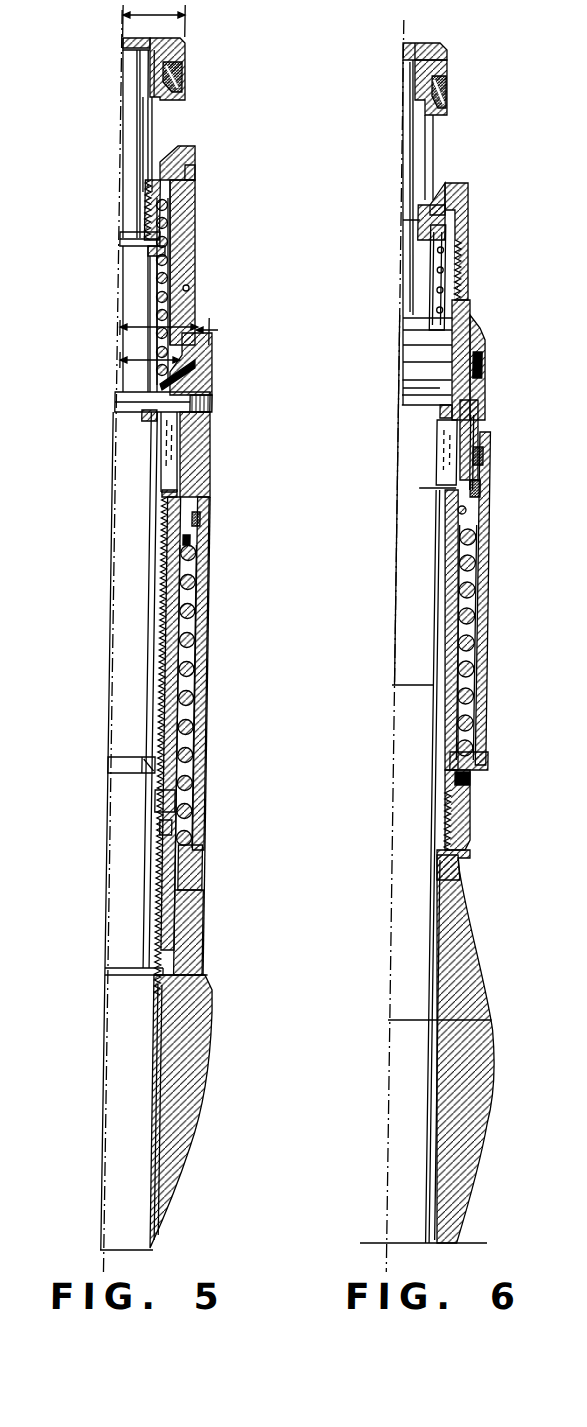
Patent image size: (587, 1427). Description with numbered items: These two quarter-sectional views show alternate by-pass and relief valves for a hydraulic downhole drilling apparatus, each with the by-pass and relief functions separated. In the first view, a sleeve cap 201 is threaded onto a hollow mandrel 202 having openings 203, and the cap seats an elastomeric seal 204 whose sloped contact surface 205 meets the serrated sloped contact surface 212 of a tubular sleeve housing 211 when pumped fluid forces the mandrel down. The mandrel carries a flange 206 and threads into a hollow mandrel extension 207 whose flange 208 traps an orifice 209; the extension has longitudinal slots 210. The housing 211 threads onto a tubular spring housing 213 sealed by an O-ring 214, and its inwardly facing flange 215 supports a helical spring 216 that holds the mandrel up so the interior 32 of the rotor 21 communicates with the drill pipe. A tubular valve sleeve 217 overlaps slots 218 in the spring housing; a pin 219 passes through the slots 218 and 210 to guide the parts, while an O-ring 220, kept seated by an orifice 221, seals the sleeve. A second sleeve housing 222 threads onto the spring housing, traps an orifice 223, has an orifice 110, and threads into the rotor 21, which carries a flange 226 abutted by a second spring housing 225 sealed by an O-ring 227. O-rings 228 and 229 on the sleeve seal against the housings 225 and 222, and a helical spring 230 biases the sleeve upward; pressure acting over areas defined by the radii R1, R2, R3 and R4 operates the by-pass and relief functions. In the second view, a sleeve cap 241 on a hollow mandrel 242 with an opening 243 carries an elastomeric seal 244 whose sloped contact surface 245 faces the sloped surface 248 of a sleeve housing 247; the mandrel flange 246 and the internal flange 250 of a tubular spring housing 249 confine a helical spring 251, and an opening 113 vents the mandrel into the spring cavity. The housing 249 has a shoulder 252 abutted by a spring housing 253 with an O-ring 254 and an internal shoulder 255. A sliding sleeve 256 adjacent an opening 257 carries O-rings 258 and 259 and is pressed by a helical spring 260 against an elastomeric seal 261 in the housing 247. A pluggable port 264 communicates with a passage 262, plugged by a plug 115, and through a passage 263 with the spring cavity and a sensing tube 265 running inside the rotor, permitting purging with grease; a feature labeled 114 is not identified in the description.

In FIG. 5, the rotor 21 is at (221, 1066).
In FIG. 6, the rotor 21 is at (497, 1129).
In FIG. 5, the interior of the rotor 32 is at (126, 1037).
In FIG. 5, the orifice 110 is at (188, 801).
In FIG. 6, the opening 113 is at (434, 271).
In FIG. 6, the shoulder 114 is at (505, 1021).
In FIG. 6, the plug 115 is at (488, 373).
In FIG. 5, the sleeve cap 201 is at (122, 44).
In FIG. 5, the hollow mandrel 202 is at (130, 81).
In FIG. 5, the openings 203 is at (152, 123).
In FIG. 5, the elastomeric seal 204 is at (186, 70).
In FIG. 5, the downwardly facing sloped contact surface 205 is at (182, 91).
In FIG. 5, the radially outwardly extending flange 206 is at (151, 184).
In FIG. 5, the hollow mandrel extension 207 is at (132, 299).
In FIG. 5, the flange 208 is at (154, 253).
In FIG. 5, the orifice 209 is at (125, 239).
In FIG. 5, the longitudinal slots 210 is at (155, 363).
In FIG. 5, the tubular sleeve housing 211 is at (198, 171).
In FIG. 5, the upwardly facing sloped contact surface 212 is at (184, 148).
In FIG. 5, the tubular spring housing 213 is at (200, 303).
In FIG. 5, the O-ring 214 is at (193, 286).
In FIG. 5, the inwardly facing flange 215 is at (155, 391).
In FIG. 5, the helical spring 216 is at (193, 223).
In FIG. 5, the tubular valve sleeve 217 is at (218, 456).
In FIG. 5, the longitudinal slots 218 is at (172, 453).
In FIG. 5, the pin 219 is at (218, 405).
In FIG. 5, the O-ring 220 is at (218, 359).
In FIG. 5, the orifice 221 is at (201, 379).
In FIG. 5, the second tubular sleeve housing 222 is at (131, 871).
In FIG. 5, the orifice 223 is at (162, 776).
In FIG. 5, the second tubular spring housing 225 is at (217, 901).
In FIG. 5, the radially extending flange 226 is at (219, 969).
In FIG. 5, the O-ring 227 is at (216, 861).
In FIG. 5, the O-ring 228 is at (208, 519).
In FIG. 5, the O-ring 229 is at (199, 541).
In FIG. 5, the helical spring 230 is at (205, 612).
In FIG. 6, the sleeve cap 241 is at (406, 49).
In FIG. 6, the hollow mandrel 242 is at (414, 136).
In FIG. 6, the opening 243 is at (438, 138).
In FIG. 6, the elastomeric seal 244 is at (449, 76).
In FIG. 6, the downwardly facing sloped contact surface 245 is at (448, 109).
In FIG. 6, the radially outwardly extending flange 246 is at (421, 221).
In FIG. 6, the tubular sleeve housing 247 is at (473, 193).
In FIG. 6, the upwardly facing sloped contact surface 248 is at (447, 186).
In FIG. 6, the tubular spring housing 249 is at (416, 394).
In FIG. 6, the radially extending internal flange 250 is at (451, 416).
In FIG. 6, the helical spring 251 is at (425, 358).
In FIG. 6, the upwardly facing external shoulder 252 is at (474, 869).
In FIG. 6, the spring housing 253 is at (484, 823).
In FIG. 6, the O-ring 254 is at (482, 779).
In FIG. 6, the internal shoulder 255 is at (483, 756).
In FIG. 6, the sliding sleeve 256 is at (486, 416).
In FIG. 6, the opening 257 is at (448, 483).
In FIG. 6, the O-ring 258 is at (466, 516).
In FIG. 6, the O-ring 259 is at (491, 461).
In FIG. 6, the helical spring 260 is at (485, 588).
In FIG. 6, the elastomeric seal 261 is at (491, 353).
In FIG. 6, the passage 262 is at (498, 441).
In FIG. 6, the passage 263 is at (488, 491).
In FIG. 6, the pluggable port 264 is at (486, 402).
In FIG. 6, the sensing tube 265 is at (443, 853).
In FIG. 5, the radius R1 is at (154, 18).
In FIG. 5, the radius R2 is at (159, 319).
In FIG. 5, the radius R3 is at (220, 325).
In FIG. 5, the radius R4 is at (150, 352).